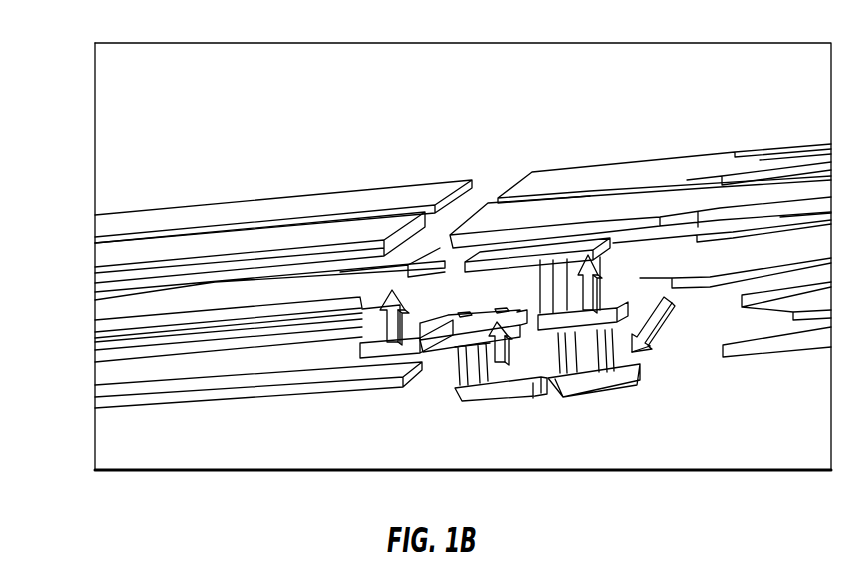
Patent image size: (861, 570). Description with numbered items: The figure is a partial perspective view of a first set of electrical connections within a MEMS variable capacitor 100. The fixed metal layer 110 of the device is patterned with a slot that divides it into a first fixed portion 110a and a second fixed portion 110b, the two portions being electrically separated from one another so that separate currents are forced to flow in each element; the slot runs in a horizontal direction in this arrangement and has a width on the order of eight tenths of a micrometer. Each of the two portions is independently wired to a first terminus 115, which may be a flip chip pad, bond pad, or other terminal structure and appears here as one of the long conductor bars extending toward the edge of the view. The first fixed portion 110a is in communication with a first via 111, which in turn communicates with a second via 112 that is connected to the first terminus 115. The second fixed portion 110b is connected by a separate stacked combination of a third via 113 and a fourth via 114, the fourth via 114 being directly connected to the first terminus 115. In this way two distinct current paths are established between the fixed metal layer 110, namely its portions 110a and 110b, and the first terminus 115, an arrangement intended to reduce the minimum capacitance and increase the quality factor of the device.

The variable capacitor 100 is at (263, 118).
The fixed metal layer 110 is at (352, 383).
The first fixed portion 110a is at (505, 393).
The second fixed portion 110b is at (618, 385).
The first via 111 is at (465, 360).
The second via 112 is at (362, 309).
The third via 113 is at (650, 347).
The fourth via 114 is at (598, 279).
The first terminus 115 is at (107, 325).